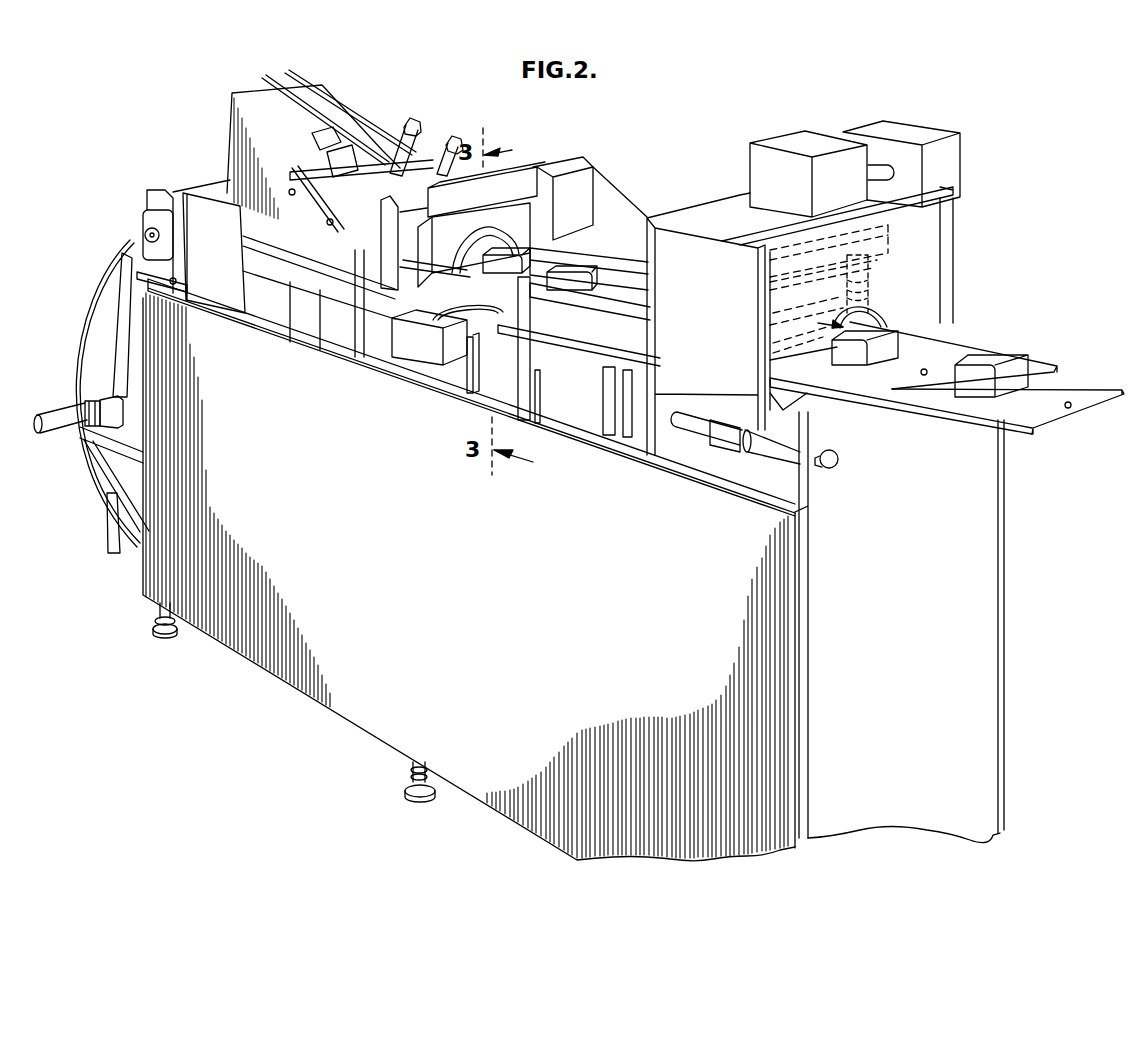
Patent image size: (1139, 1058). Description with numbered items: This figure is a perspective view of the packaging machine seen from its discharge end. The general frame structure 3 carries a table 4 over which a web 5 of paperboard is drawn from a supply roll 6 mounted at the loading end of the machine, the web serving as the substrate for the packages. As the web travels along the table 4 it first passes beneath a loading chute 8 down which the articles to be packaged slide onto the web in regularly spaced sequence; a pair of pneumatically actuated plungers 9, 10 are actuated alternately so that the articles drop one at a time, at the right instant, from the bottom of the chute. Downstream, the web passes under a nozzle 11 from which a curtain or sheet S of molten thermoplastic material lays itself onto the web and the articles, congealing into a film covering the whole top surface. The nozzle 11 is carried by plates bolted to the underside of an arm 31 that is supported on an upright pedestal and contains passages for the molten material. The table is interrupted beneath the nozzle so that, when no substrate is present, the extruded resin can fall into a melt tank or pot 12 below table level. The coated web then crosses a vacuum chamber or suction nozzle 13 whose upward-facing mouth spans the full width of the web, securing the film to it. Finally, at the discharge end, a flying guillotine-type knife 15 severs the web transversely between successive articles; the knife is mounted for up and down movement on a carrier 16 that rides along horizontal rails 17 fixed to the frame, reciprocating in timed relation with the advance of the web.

The general frame structure 3 is at (349, 349).
The table 4 is at (883, 397).
The web 5 is at (607, 280).
The supply roll 6 is at (97, 337).
The loading chute 8 is at (352, 140).
The pneumatically actuated plunger 9 is at (389, 160).
The pneumatically actuated plunger 10 is at (438, 152).
The nozzle 11 is at (523, 227).
The melt tank or pot 12 is at (473, 320).
The vacuum chamber or suction nozzle 13 is at (590, 330).
The flying guillotine-type knife 15 is at (886, 280).
The carrier 16 is at (712, 335).
The horizontal rails 17 is at (772, 452).
The arm 31 is at (503, 193).
The curtain or sheet of molten thermoplastic material S is at (471, 268).